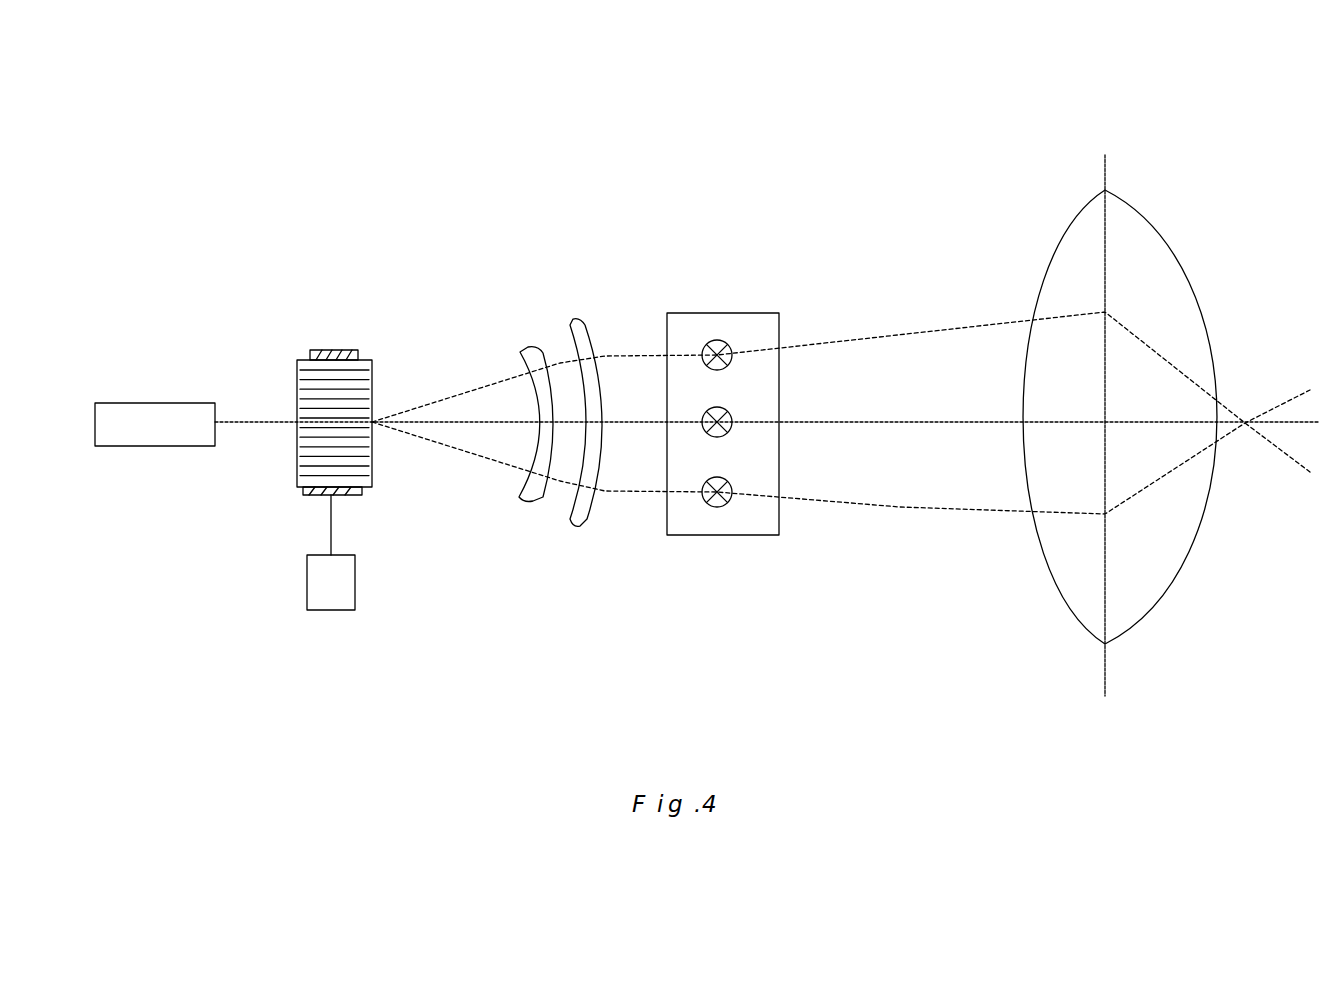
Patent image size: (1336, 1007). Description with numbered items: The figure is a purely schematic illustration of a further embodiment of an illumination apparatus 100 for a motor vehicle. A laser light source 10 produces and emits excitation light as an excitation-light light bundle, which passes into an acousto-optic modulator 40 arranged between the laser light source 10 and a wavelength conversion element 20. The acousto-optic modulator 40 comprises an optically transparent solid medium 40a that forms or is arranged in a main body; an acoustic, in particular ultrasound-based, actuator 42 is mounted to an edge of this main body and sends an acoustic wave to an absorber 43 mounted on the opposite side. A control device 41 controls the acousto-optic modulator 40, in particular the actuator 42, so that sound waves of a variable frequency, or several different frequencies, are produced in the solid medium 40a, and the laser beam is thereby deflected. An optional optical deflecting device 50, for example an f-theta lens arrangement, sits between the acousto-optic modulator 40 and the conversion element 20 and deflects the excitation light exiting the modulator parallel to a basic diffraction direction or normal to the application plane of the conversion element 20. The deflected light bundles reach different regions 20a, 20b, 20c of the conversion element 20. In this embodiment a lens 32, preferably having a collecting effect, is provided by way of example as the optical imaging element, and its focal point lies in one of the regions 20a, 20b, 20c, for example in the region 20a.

The illumination apparatus 100 is at (215, 146).
The laser light source 10 is at (158, 380).
The acousto-optic modulator 40 is at (308, 435).
The solid medium 40a is at (307, 377).
The absorber 43 is at (353, 348).
The actuator 42 is at (297, 490).
The control device 41 is at (338, 615).
The optical deflecting device 50 is at (538, 332).
The wavelength conversion element 20 is at (743, 486).
The region of the conversion element 20a is at (699, 434).
The region of the conversion element 20b is at (716, 514).
The region of the conversion element 20c is at (735, 365).
The lens 32 is at (1061, 189).